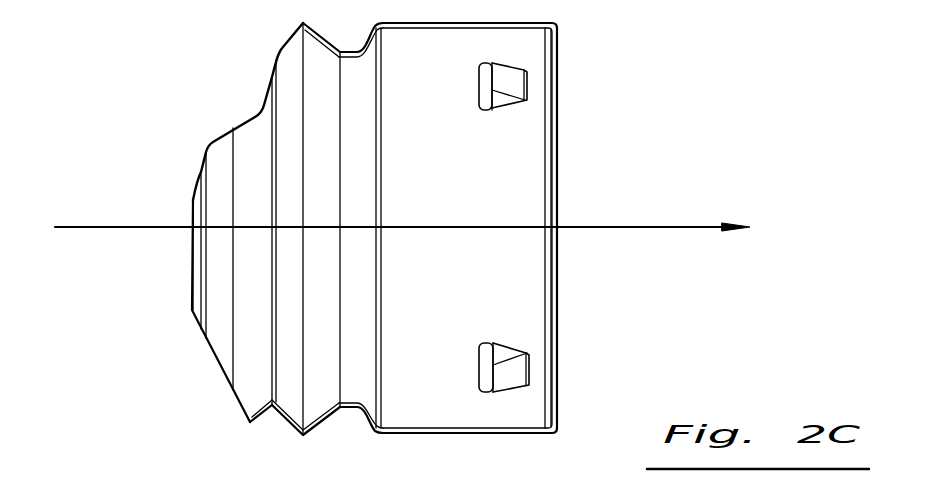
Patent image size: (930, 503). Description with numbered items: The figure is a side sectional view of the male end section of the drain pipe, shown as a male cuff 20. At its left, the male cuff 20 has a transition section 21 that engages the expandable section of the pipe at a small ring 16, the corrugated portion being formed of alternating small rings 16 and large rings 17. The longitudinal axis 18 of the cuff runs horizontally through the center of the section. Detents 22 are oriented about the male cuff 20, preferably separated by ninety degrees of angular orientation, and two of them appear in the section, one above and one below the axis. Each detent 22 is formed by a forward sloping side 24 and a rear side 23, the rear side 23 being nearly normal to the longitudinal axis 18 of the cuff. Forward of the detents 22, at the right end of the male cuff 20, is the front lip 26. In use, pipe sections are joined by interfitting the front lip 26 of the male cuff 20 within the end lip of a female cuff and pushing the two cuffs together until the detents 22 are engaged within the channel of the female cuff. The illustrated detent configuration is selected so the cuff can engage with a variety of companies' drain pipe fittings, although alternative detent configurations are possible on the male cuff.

The small ring 16 is at (272, 407).
The large ring 17 is at (303, 437).
The longitudinal axis 18 is at (82, 225).
The male cuff 20 is at (569, 228).
The transition section 21 is at (363, 418).
The detents 22 is at (528, 211).
The rear sides 23 is at (492, 92).
The forward sloping sides 24 is at (515, 72).
The front lip 26 is at (533, 203).